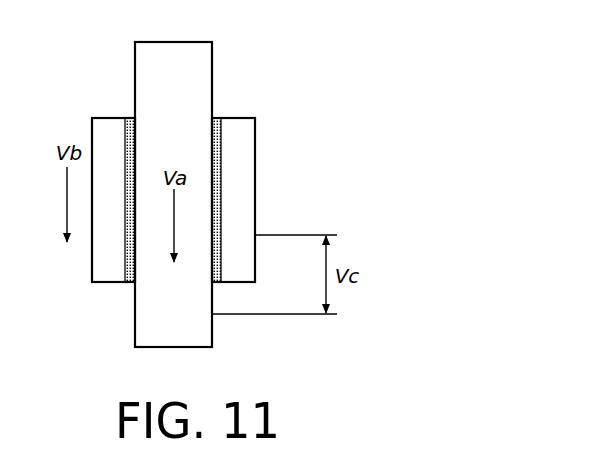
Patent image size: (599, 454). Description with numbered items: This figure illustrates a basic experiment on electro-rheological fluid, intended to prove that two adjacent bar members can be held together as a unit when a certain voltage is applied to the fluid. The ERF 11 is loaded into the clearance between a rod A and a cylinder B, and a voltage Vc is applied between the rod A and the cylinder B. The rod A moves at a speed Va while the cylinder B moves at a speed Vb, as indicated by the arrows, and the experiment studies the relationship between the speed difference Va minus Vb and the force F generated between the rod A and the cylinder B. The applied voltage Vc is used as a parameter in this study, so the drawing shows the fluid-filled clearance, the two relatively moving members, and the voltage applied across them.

The ERF 11 is at (216, 118).
The rod A is at (183, 104).
The cylinder B is at (256, 168).